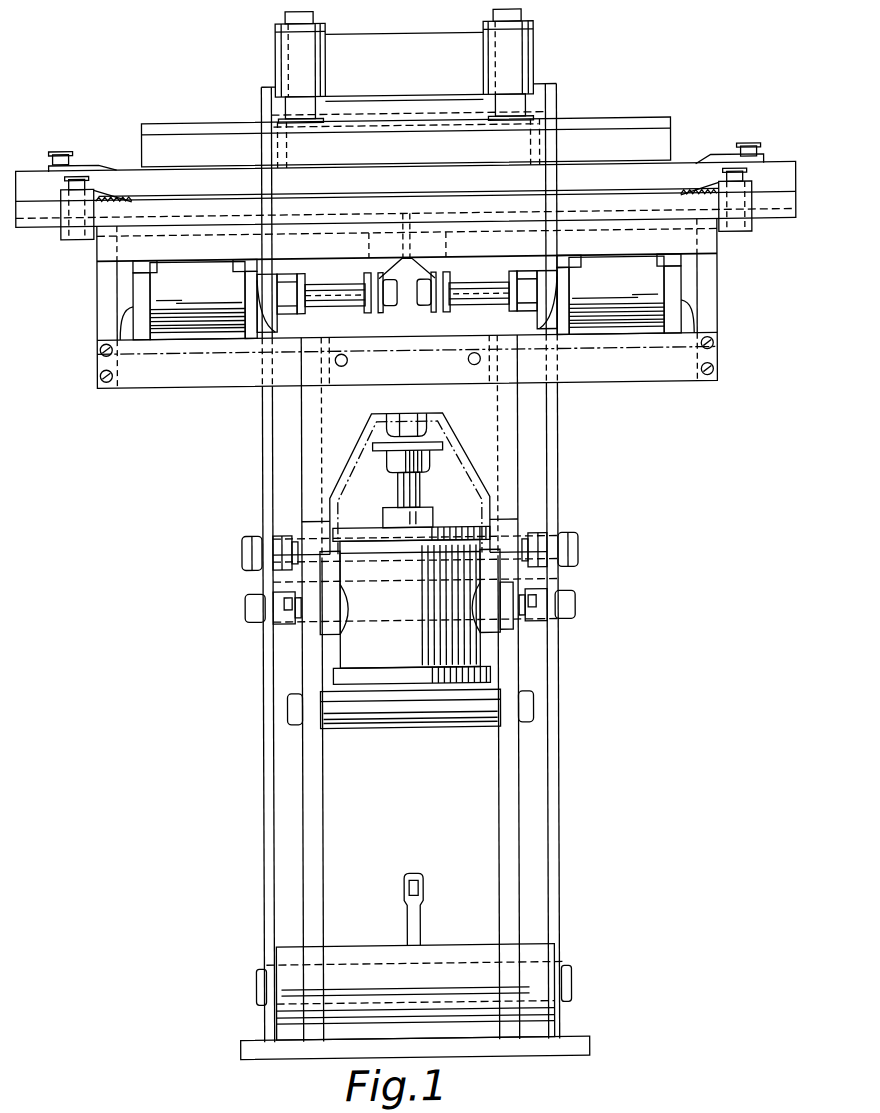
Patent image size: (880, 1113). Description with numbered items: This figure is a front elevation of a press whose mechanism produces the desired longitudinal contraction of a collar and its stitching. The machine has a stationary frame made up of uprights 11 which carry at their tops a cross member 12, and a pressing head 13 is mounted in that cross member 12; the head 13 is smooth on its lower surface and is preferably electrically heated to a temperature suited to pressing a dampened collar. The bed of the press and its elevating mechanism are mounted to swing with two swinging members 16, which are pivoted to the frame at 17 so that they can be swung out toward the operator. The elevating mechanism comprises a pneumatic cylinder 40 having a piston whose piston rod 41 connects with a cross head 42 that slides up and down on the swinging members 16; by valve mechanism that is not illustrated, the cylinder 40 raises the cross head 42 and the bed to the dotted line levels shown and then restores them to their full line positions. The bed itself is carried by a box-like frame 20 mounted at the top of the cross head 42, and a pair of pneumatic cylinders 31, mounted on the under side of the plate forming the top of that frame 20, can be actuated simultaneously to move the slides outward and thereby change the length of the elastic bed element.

The uprights 11 is at (267, 476).
The cross member 12 is at (388, 48).
The pressing head 13 is at (511, 144).
The swinging members 16 is at (310, 825).
The pivot 17 is at (567, 982).
The box-like frame 20 is at (716, 320).
The pneumatic cylinders 31 is at (180, 315).
The pneumatic cylinder 40 is at (360, 652).
The piston rod 41 is at (398, 492).
The cross head 42 is at (475, 447).